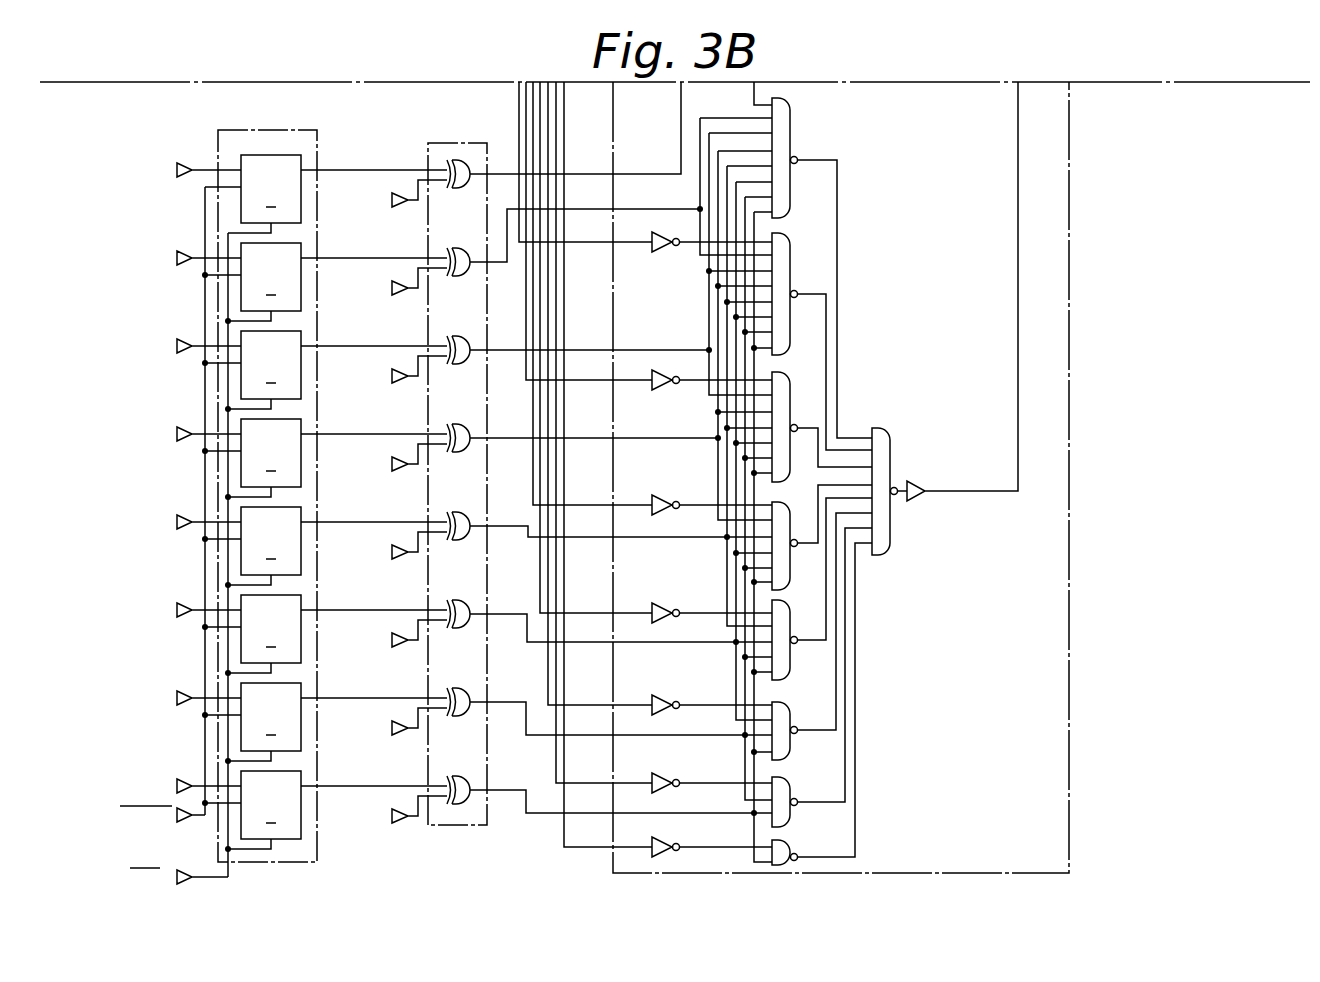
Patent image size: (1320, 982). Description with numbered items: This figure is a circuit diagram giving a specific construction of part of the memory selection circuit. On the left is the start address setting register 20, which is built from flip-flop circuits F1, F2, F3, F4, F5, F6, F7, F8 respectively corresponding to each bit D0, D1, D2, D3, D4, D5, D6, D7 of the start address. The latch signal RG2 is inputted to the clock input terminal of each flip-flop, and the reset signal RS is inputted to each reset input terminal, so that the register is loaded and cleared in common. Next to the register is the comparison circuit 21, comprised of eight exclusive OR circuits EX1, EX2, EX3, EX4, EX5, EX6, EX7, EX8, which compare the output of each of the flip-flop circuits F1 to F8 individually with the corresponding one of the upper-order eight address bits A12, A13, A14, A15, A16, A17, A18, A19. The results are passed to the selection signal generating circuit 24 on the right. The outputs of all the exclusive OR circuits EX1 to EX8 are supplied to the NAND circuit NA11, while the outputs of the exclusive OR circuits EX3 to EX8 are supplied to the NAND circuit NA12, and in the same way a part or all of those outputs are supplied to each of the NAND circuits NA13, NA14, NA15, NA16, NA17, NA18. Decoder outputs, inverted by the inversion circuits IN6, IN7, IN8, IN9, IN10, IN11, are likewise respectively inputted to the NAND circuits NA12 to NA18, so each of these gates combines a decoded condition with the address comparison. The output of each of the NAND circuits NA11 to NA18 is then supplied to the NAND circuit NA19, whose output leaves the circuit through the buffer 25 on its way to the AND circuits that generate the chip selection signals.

The start address setting register 20 is at (317, 852).
The comparison circuit 21 is at (480, 805).
The selection signal generating circuit 24 is at (1069, 864).
The buffer 25 is at (918, 484).
The flip-flop circuit F1 is at (241, 205).
The flip-flop circuit F2 is at (241, 293).
The flip-flop circuit F3 is at (241, 381).
The flip-flop circuit F4 is at (241, 469).
The flip-flop circuit F5 is at (241, 557).
The flip-flop circuit F6 is at (241, 645).
The flip-flop circuit F7 is at (241, 733).
The flip-flop circuit F8 is at (241, 823).
The address bit A12 is at (391, 196).
The address bit A13 is at (391, 284).
The address bit A14 is at (391, 372).
The address bit A15 is at (391, 460).
The address bit A16 is at (391, 548).
The address bit A17 is at (391, 636).
The address bit A18 is at (391, 724).
The address bit A19 is at (391, 812).
The exclusive OR circuit EX1 is at (461, 190).
The exclusive OR circuit EX2 is at (461, 278).
The exclusive OR circuit EX3 is at (461, 366).
The exclusive OR circuit EX4 is at (461, 454).
The exclusive OR circuit EX5 is at (461, 542).
The exclusive OR circuit EX6 is at (461, 630).
The exclusive OR circuit EX7 is at (461, 718).
The exclusive OR circuit EX8 is at (461, 806).
The inversion circuit IN6 is at (663, 252).
The inversion circuit IN7 is at (663, 390).
The inversion circuit IN8 is at (662, 495).
The inversion circuit IN9 is at (662, 603).
The inversion circuit IN10 is at (662, 695).
The inversion circuit IN11 is at (662, 773).
The NAND circuit NA11 is at (792, 132).
The NAND circuit NA12 is at (790, 246).
The NAND circuit NA13 is at (790, 403).
The NAND circuit NA14 is at (790, 574).
The NAND circuit NA15 is at (790, 656).
The NAND circuit NA16 is at (790, 746).
The NAND circuit NA17 is at (786, 827).
The NAND circuit NA18 is at (792, 863).
The NAND circuit NA19 is at (880, 430).
The bit D0 is at (182, 171).
The bit D1 is at (182, 259).
The bit D2 is at (182, 347).
The bit D3 is at (182, 435).
The bit D4 is at (182, 523).
The bit D5 is at (182, 611).
The bit D6 is at (182, 699).
The bit D7 is at (182, 787).
The latch signal RG2 is at (162, 817).
The reset signal RS is at (179, 879).